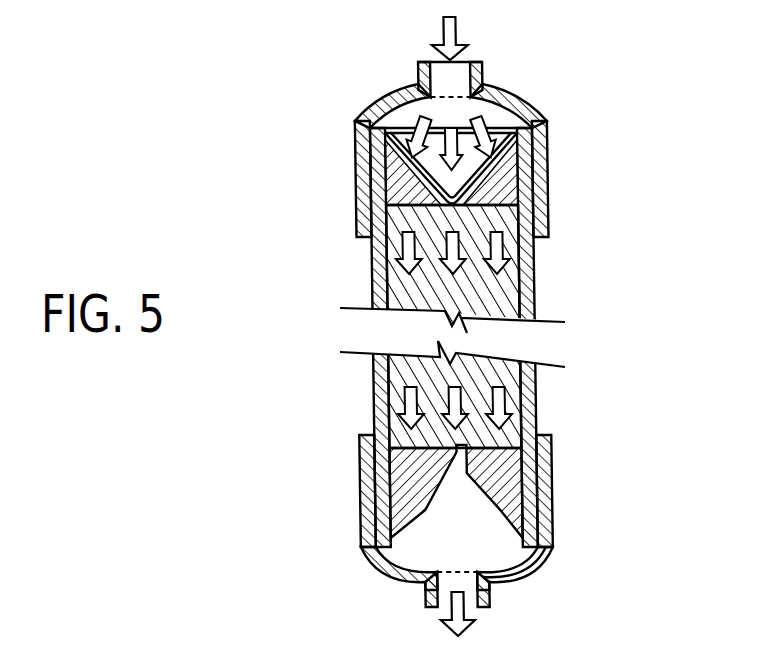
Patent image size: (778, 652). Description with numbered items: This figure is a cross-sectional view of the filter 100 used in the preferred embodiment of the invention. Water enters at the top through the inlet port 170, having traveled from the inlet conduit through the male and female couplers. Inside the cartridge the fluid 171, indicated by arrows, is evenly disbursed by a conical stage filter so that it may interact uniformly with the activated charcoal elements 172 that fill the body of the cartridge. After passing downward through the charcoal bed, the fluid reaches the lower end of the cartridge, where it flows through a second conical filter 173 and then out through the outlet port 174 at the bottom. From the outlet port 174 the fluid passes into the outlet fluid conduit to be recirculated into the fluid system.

The filter 100 is at (568, 158).
The inlet port 170 is at (478, 81).
The fluid 171 is at (455, 26).
The activated charcoal elements 172 is at (540, 272).
The second conical filter 173 is at (410, 503).
The outlet port 174 is at (497, 593).